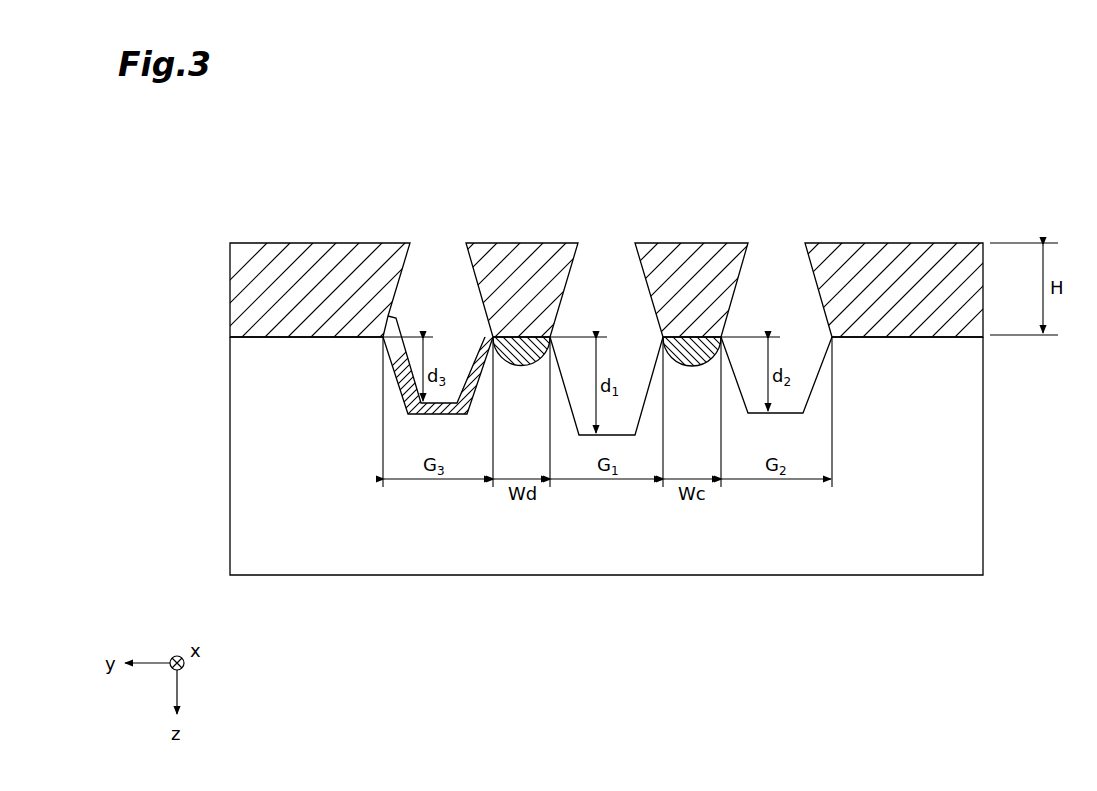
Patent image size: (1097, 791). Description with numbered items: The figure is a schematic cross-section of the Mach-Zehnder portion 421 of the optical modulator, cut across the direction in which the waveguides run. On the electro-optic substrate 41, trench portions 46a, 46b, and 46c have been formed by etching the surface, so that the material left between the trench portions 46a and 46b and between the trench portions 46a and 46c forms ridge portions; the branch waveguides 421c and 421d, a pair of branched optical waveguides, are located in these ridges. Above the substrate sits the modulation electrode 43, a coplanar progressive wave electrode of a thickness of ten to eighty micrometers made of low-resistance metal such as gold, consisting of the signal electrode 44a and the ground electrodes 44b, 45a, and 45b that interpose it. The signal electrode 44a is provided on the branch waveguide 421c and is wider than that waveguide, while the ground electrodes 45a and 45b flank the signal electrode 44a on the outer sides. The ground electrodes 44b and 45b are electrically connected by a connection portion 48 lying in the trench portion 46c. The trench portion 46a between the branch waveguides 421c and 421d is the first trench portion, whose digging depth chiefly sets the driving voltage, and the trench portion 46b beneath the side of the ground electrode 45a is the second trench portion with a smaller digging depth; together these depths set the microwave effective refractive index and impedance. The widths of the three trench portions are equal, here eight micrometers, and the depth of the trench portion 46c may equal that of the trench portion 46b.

The Mach-Zehnder portion 421 is at (993, 146).
The electro-optic substrate 41 is at (962, 443).
The modulation electrode 43 is at (223, 243).
The signal electrode 44a is at (693, 248).
The ground electrode 44b is at (532, 258).
The ground electrode 45a is at (886, 255).
The ground electrode 45b is at (311, 268).
The trench portion 46a is at (639, 341).
The trench portion 46b is at (801, 339).
The trench portion 46c is at (462, 341).
The connection portion 48 is at (400, 396).
The branch waveguide 421c is at (726, 333).
The branch waveguide 421d is at (561, 333).